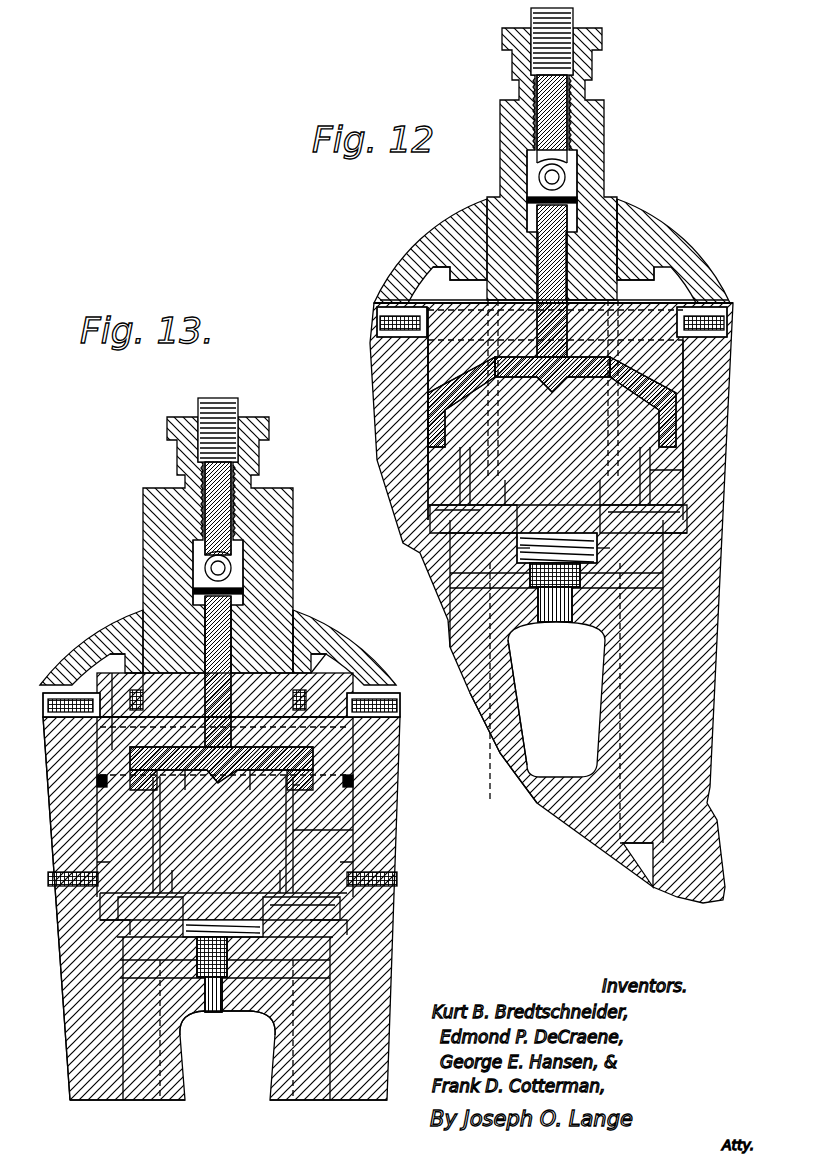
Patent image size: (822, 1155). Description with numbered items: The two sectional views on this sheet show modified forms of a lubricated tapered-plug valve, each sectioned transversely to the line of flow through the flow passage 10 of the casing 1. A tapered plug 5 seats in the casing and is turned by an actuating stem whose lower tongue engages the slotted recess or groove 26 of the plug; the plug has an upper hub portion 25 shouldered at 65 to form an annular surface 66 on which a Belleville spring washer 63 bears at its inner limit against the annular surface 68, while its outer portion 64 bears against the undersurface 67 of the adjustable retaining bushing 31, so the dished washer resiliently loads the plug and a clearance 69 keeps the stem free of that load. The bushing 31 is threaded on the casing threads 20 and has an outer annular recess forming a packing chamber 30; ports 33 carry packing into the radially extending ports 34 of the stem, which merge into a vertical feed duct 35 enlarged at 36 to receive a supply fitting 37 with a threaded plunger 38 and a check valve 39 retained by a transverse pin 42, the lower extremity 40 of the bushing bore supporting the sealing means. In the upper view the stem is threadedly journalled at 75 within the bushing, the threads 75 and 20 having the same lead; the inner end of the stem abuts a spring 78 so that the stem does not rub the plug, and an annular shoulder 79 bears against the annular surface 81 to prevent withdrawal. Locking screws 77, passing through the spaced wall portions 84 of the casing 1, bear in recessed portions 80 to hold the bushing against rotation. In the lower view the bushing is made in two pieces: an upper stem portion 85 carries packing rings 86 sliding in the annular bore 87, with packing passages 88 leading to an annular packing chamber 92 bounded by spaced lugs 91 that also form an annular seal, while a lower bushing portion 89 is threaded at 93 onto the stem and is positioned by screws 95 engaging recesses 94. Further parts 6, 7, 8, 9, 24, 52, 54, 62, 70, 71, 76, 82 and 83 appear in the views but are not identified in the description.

In FIG. 12, the casing 1 is at (736, 640).
In FIG. 13, the casing 1 is at (402, 960).
In FIG. 12, the tapered plug 5 is at (448, 633).
In FIG. 13, the tapered plug 5 is at (333, 1008).
In FIG. 12, the inlet passage 6 is at (515, 691).
In FIG. 13, the inlet passage 6 is at (150, 1015).
In FIG. 12, the outlet passage 7 is at (597, 686).
In FIG. 13, the outlet passage 7 is at (262, 1034).
In FIG. 12, the splined stem portion 8 is at (530, 600).
In FIG. 13, the splined stem portion 8 is at (155, 960).
In FIG. 12, the stem guide 9 is at (582, 602).
In FIG. 13, the stem guide 9 is at (245, 990).
In FIG. 12, the flow passage 10 is at (527, 740).
In FIG. 13, the flow passage 10 is at (244, 1078).
In FIG. 12, the casing threads 20 is at (690, 366).
In FIG. 13, the casing threads 20 is at (355, 750).
In FIG. 12, the seat ring 24 is at (672, 538).
In FIG. 13, the seat ring 24 is at (340, 928).
In FIG. 12, the upper hub portion 25 is at (445, 538).
In FIG. 13, the upper hub portion 25 is at (110, 922).
In FIG. 12, the recess 26 is at (570, 513).
In FIG. 13, the recess 26 is at (252, 892).
In FIG. 12, the packing chamber 30 is at (688, 406).
In FIG. 12, the adjustable retaining bushing 31 is at (687, 426).
In FIG. 13, the adjustable retaining bushing 31 is at (357, 768).
In FIG. 12, the inwardly extending ports 33 is at (614, 376).
In FIG. 12, the radially extending ports 34 is at (562, 393).
In FIG. 13, the radially extending ports 34 is at (221, 768).
In FIG. 12, the feed duct 35 is at (538, 245).
In FIG. 13, the feed duct 35 is at (232, 650).
In FIG. 12, the enlarged upper portion 36 is at (539, 176).
In FIG. 13, the enlarged upper portion 36 is at (205, 564).
In FIG. 12, the packing supply fitting 37 is at (586, 96).
In FIG. 13, the packing supply fitting 37 is at (255, 482).
In FIG. 12, the plunger 38 is at (575, 27).
In FIG. 13, the plunger 38 is at (240, 403).
In FIG. 12, the check valve 39 is at (566, 172).
In FIG. 13, the check valve 39 is at (232, 565).
In FIG. 12, the lower extremity of annular surface 40 is at (515, 397).
In FIG. 12, the transversely disposed pin 42 is at (580, 200).
In FIG. 13, the transversely disposed pin 42 is at (193, 590).
In FIG. 12, the dome 52 is at (428, 228).
In FIG. 13, the dome 52 is at (95, 611).
In FIG. 12, the dome flange 54 is at (632, 212).
In FIG. 13, the dome flange 54 is at (305, 615).
In FIG. 12, the stem sleeve 62 is at (605, 133).
In FIG. 13, the stem sleeve 62 is at (294, 535).
In FIG. 12, the Belleville spring washer 63 is at (690, 516).
In FIG. 13, the Belleville spring washer 63 is at (340, 912).
In FIG. 12, the outer portion of washer 64 is at (690, 499).
In FIG. 13, the outer portion of washer 64 is at (345, 904).
In FIG. 12, the shoulder 65 is at (600, 541).
In FIG. 13, the shoulder 65 is at (265, 927).
In FIG. 12, the annular surface 66 is at (440, 522).
In FIG. 13, the annular surface 66 is at (100, 905).
In FIG. 12, the undersurface 67 is at (510, 500).
In FIG. 13, the undersurface 67 is at (176, 884).
In FIG. 12, the annular surface of plug 68 is at (603, 500).
In FIG. 13, the annular surface of plug 68 is at (290, 884).
In FIG. 12, the annular space 69 is at (502, 533).
In FIG. 13, the annular space 69 is at (228, 930).
In FIG. 12, the shoulder 70 is at (447, 267).
In FIG. 13, the shoulder 70 is at (330, 660).
In FIG. 12, the disc washer 71 is at (518, 550).
In FIG. 13, the disc washer 71 is at (190, 915).
In FIG. 12, the stem threads 75 is at (648, 268).
In FIG. 12, the groove 76 is at (656, 482).
In FIG. 12, the locking screws 77 is at (727, 325).
In FIG. 13, the locking screws 77 is at (398, 709).
In FIG. 12, the spring 78 is at (600, 553).
In FIG. 12, the annular shoulder 79 is at (645, 468).
In FIG. 12, the recessed portions 80 is at (728, 299).
In FIG. 12, the annular surface 81 is at (466, 468).
In FIG. 12, the stem arm 82 is at (600, 412).
In FIG. 12, the bore 83 is at (428, 441).
In FIG. 12, the wall portions 84 is at (727, 313).
In FIG. 13, the wall portions 84 is at (400, 702).
In FIG. 13, the upper stem portion 85 is at (140, 732).
In FIG. 13, the packing rings 86 is at (293, 700).
In FIG. 13, the annular bore 87 is at (300, 680).
In FIG. 13, the packing passages 88 is at (250, 780).
In FIG. 13, the lower bushing portion 89 is at (353, 822).
In FIG. 13, the lugs 91 is at (353, 780).
In FIG. 13, the annular chamber 92 is at (300, 795).
In FIG. 13, the threaded portion 93 is at (318, 832).
In FIG. 13, the recesses 94 is at (353, 866).
In FIG. 13, the positioning screws 95 is at (397, 878).